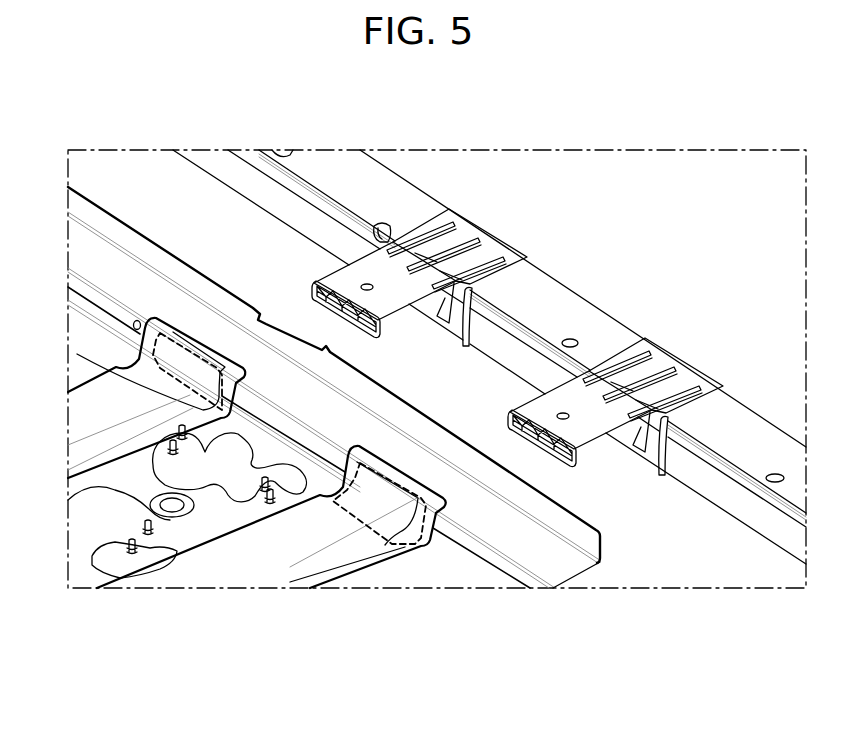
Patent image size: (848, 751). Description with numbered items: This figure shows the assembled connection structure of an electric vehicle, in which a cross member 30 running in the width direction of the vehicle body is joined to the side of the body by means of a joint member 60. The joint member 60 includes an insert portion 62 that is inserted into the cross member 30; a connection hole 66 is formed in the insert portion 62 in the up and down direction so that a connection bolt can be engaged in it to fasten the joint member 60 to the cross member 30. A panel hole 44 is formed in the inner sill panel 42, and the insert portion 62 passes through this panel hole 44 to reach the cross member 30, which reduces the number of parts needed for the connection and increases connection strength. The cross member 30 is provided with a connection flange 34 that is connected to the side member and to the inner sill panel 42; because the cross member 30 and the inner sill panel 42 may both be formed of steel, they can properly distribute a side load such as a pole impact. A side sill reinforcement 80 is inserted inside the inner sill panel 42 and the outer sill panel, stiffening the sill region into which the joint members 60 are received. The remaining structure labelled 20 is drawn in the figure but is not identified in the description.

The lower rail 20 is at (438, 574).
The cross member 30 is at (93, 408).
The connection flange 34 is at (192, 336).
The inner sill panel 42 is at (557, 560).
The panel hole 44 is at (68, 354).
The joint member 60 is at (504, 232).
The insert portion 62 is at (333, 280).
The connection hole 66 is at (367, 285).
The side sill reinforcement 80 is at (752, 425).